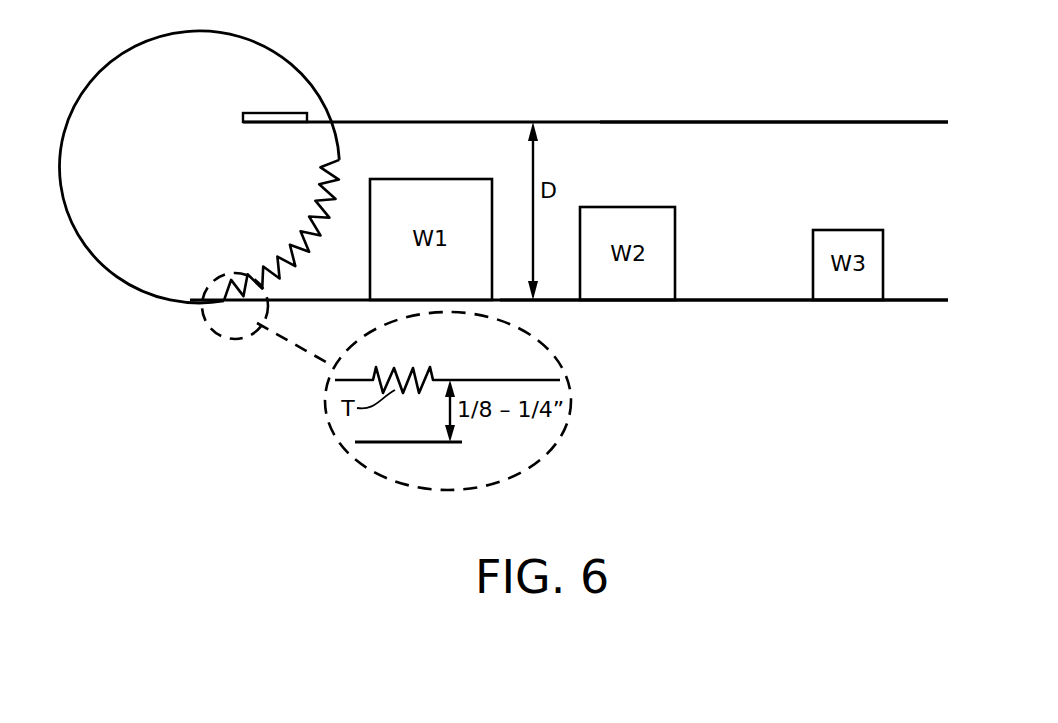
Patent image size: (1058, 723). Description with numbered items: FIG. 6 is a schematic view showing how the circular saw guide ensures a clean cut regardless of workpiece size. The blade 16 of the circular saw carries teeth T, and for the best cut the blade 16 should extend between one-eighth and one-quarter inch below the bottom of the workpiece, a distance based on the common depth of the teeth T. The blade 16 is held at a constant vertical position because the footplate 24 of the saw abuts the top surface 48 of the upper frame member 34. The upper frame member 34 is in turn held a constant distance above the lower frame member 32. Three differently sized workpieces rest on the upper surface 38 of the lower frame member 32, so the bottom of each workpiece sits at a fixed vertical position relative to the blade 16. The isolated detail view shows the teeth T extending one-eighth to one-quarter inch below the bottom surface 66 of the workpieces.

The blade 16 is at (88, 247).
The teeth T is at (317, 228).
The footplate 24 is at (267, 113).
The upper frame member 34 is at (886, 122).
The top surface 48 is at (781, 122).
The lower frame member 32 is at (915, 299).
The upper surface 38 is at (727, 299).
The bottom surface 66 is at (467, 380).